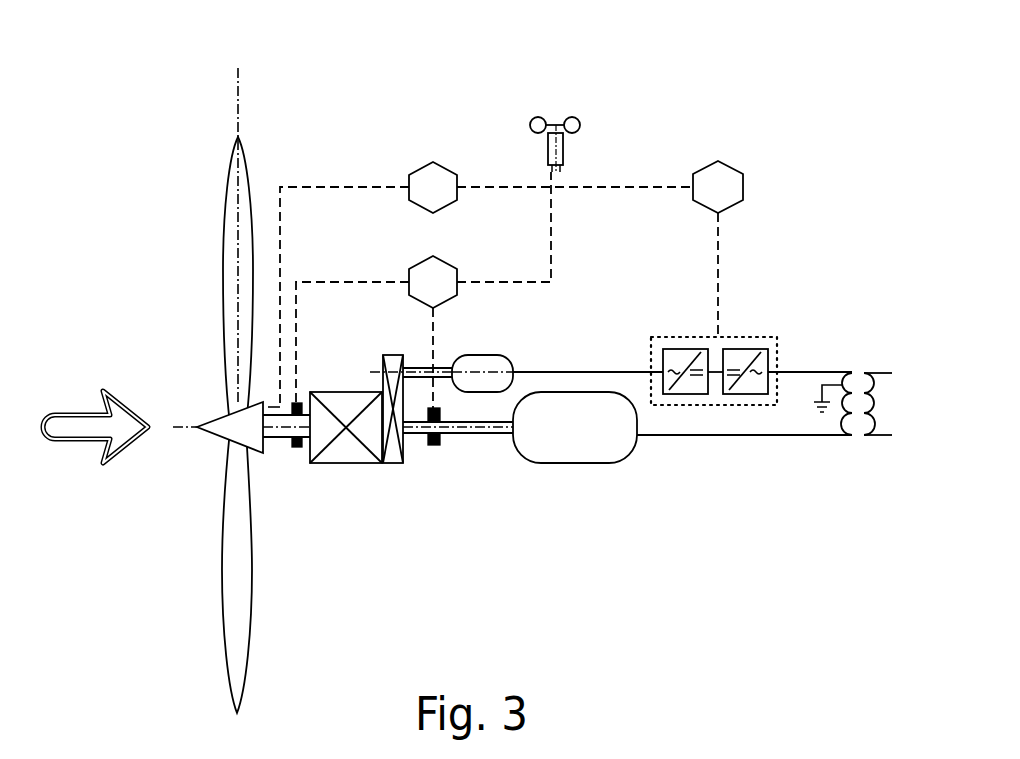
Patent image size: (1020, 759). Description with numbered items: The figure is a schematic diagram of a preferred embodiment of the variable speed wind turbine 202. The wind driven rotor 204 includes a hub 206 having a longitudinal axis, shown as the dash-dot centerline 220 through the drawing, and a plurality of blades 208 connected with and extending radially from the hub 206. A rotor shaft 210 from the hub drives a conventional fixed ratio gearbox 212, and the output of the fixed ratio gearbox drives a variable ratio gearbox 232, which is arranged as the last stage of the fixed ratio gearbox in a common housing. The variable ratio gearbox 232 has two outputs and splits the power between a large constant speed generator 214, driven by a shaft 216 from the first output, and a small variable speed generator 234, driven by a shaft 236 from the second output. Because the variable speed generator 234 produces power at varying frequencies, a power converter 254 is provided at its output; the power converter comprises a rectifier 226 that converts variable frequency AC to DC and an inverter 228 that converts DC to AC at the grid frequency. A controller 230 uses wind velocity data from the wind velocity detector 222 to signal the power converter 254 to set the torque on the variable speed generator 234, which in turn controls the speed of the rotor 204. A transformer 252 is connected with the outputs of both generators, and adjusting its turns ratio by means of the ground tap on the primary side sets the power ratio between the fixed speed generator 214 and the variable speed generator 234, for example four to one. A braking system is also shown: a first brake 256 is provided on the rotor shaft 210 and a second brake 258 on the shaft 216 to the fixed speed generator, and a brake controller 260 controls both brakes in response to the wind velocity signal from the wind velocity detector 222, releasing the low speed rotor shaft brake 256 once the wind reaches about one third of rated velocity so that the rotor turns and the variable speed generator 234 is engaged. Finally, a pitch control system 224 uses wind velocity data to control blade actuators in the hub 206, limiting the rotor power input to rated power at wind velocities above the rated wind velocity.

The variable speed wind turbine 202 is at (648, 564).
The wind driven rotor 204 is at (258, 655).
The hub 206 is at (215, 411).
The blades 208 is at (211, 240).
The rotor shaft 210 is at (279, 447).
The fixed ratio gearbox 212 is at (347, 466).
The constant speed generator 214 is at (575, 466).
The shaft 216 is at (478, 438).
The rotor axis 220 is at (249, 96).
The wind velocity detector 222 is at (562, 115).
The pitch control system 224 is at (412, 160).
The rectifier 226 is at (680, 346).
The inverter 228 is at (756, 346).
The controller 230 is at (702, 164).
The variable ratio gearbox 232 is at (394, 466).
The variable speed generator 234 is at (462, 351).
The shaft 236 is at (420, 364).
The transformer 252 is at (857, 452).
The power converter 254 is at (715, 331).
The first brake 256 is at (296, 452).
The second brake 258 is at (433, 448).
The brake controller 260 is at (419, 256).